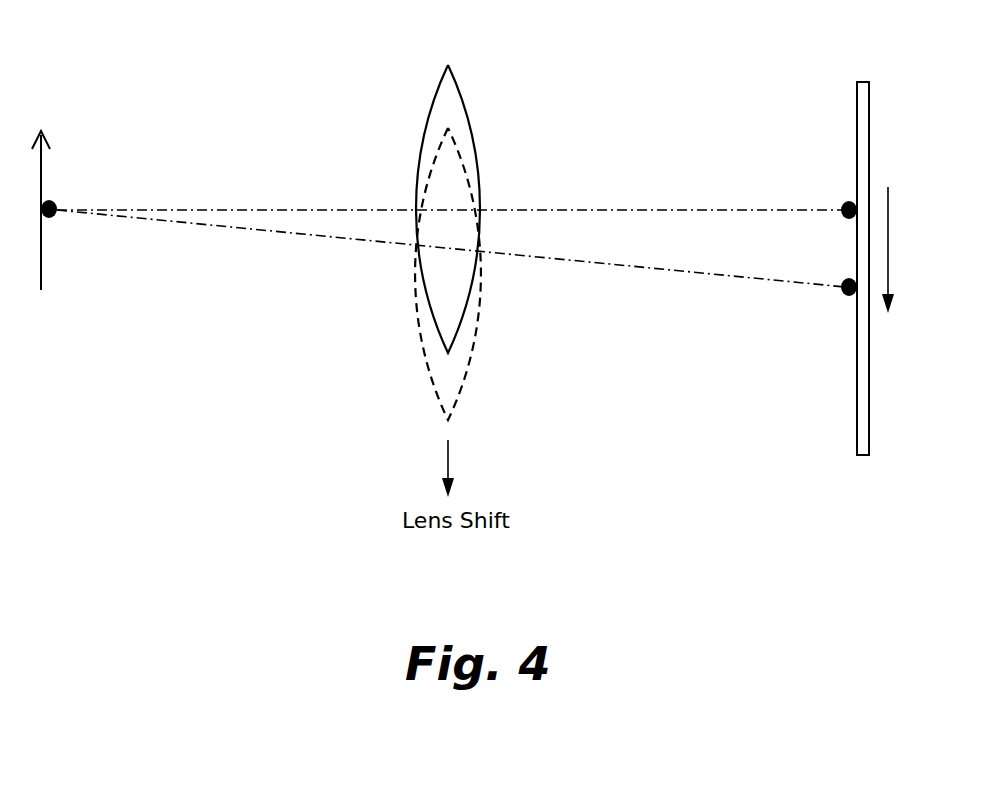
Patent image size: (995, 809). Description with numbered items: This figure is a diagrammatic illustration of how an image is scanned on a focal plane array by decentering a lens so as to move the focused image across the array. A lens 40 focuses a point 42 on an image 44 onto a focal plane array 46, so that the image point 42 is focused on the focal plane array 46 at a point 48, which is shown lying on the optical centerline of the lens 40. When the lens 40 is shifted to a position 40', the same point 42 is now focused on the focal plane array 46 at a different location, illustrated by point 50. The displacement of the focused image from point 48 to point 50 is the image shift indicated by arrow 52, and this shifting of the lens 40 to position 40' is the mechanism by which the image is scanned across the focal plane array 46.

The lens 40 is at (413, 208).
The shifted lens position 40' is at (413, 274).
The point 42 is at (56, 217).
The image 44 is at (41, 170).
The focal plane array 46 is at (857, 122).
The point 48 is at (843, 203).
The point 50 is at (842, 292).
The arrow 52 is at (886, 244).